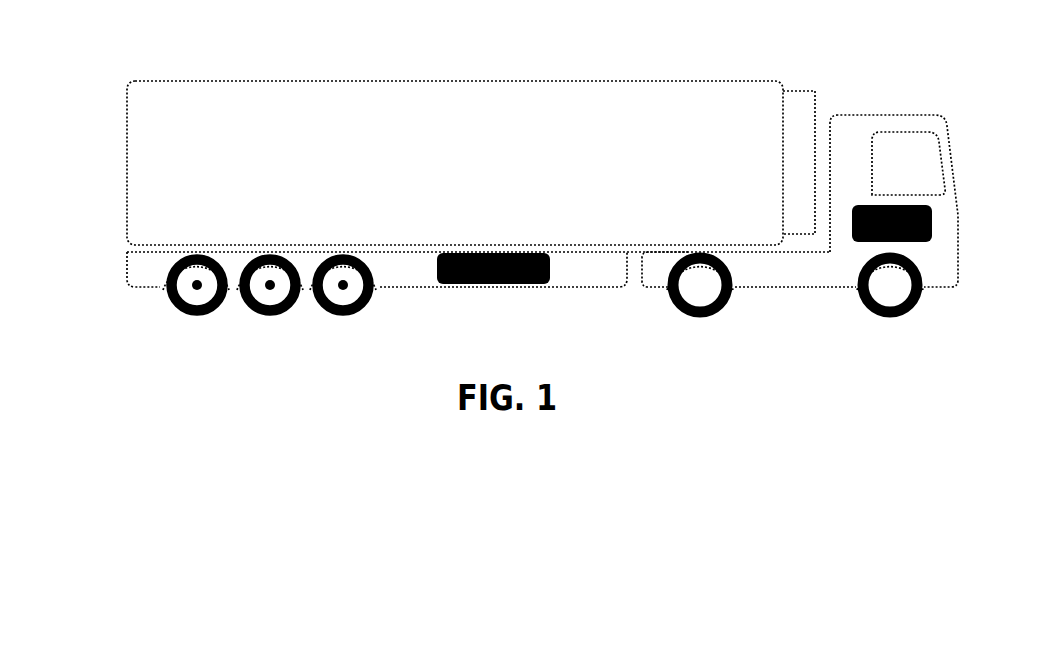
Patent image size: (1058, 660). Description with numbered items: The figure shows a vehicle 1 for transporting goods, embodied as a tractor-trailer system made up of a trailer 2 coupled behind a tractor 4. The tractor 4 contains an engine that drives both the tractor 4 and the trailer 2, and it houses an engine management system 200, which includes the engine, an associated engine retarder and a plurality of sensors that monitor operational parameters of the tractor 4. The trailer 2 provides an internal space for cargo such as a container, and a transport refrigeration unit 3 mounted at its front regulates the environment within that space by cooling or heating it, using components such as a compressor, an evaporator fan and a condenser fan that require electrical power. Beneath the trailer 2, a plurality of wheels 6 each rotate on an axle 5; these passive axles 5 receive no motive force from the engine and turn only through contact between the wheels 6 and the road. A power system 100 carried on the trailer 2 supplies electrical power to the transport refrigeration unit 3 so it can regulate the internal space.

The vehicle 1 is at (134, 51).
The trailer 2 is at (165, 164).
The transport refrigeration unit 3 is at (798, 110).
The tractor 4 is at (889, 100).
The axle 5 is at (193, 288).
The wheel 6 is at (251, 309).
The power system 100 is at (445, 284).
The engine management system 200 is at (852, 226).